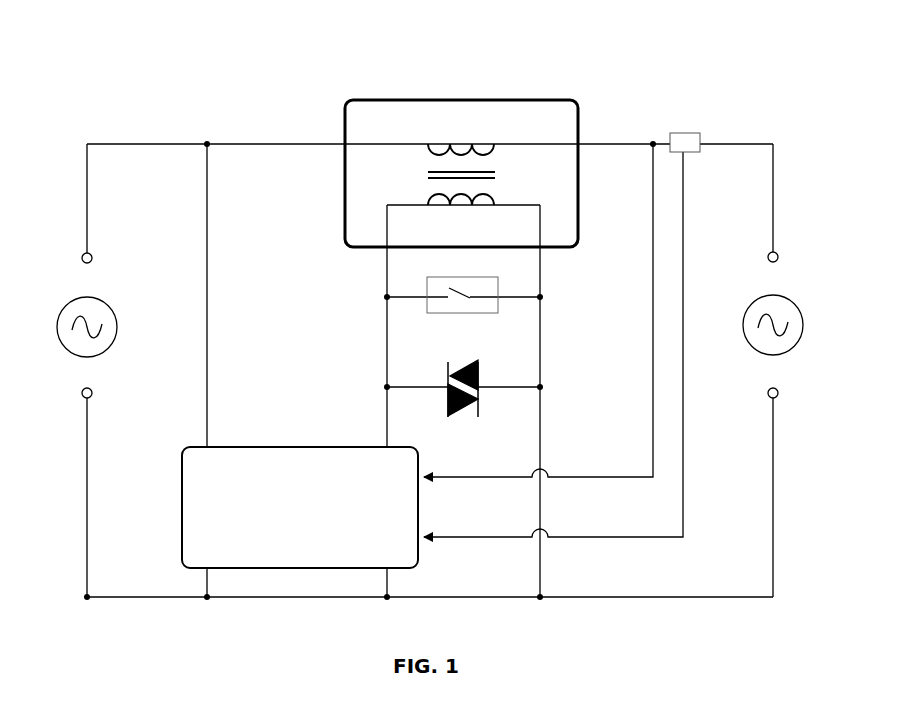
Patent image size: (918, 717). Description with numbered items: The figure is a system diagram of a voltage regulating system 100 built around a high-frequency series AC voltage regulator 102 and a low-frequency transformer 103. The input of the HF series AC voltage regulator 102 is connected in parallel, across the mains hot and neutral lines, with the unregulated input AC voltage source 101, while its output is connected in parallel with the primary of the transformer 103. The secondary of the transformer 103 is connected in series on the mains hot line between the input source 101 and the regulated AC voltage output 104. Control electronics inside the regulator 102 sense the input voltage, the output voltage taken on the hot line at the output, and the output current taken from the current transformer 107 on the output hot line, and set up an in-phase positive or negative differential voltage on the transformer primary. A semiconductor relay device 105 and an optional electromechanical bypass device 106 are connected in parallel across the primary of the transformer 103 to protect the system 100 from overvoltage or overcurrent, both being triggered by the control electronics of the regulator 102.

The voltage regulating system 100 is at (130, 101).
The unregulated input AC voltage source 101 is at (67, 319).
The HF series AC voltage regulator 102 is at (291, 444).
The transformer 103 is at (342, 132).
The regulated AC voltage output 104 is at (789, 314).
The semiconductor relay device 105 is at (463, 385).
The electromechanical bypass device 106 is at (463, 296).
The current transformer 107 is at (704, 139).